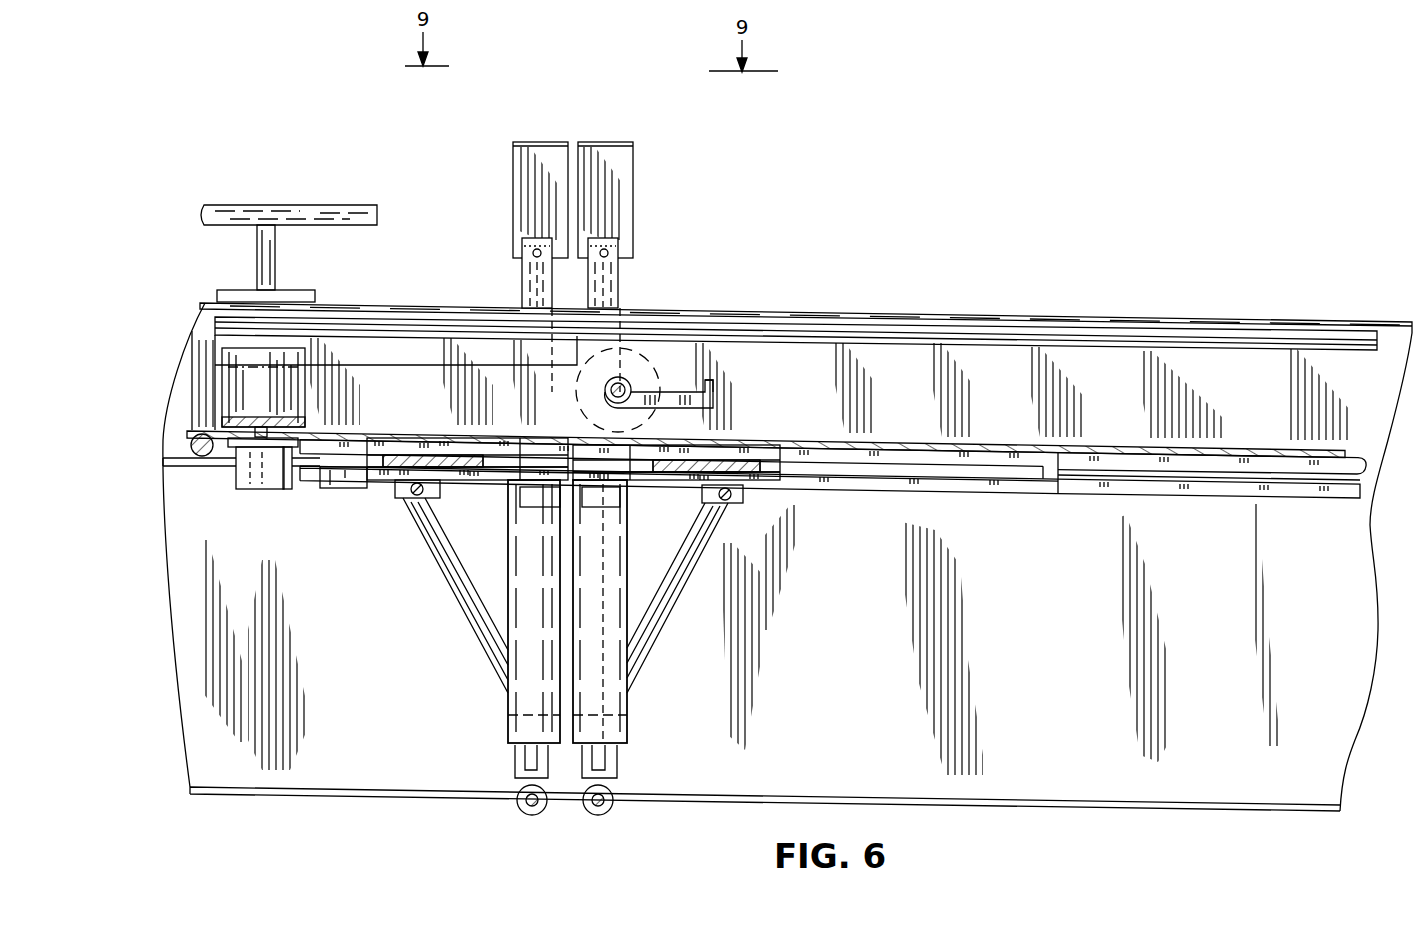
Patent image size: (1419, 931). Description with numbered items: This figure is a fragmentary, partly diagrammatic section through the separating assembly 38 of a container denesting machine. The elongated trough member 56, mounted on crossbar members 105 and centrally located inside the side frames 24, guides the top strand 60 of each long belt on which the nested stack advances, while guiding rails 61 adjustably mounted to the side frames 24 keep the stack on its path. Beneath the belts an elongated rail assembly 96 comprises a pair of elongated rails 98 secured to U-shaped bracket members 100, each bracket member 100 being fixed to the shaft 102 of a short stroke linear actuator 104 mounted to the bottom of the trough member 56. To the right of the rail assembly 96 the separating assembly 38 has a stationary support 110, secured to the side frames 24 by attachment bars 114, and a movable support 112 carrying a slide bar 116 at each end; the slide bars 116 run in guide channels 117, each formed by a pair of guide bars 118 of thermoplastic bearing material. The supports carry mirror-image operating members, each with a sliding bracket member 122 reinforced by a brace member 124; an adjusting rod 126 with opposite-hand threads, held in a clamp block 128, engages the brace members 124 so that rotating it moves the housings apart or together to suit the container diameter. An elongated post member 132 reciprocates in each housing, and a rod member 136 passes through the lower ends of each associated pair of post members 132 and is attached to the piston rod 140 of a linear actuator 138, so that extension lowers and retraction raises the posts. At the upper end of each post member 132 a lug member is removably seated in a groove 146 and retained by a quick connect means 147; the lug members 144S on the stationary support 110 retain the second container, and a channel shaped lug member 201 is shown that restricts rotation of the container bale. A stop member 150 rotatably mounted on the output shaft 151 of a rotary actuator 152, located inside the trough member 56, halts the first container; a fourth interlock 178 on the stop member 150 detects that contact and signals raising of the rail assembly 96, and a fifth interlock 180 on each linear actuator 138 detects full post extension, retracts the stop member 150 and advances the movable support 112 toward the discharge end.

The side frames 24 is at (1052, 317).
The separating assembly 38 is at (555, 80).
The trough member 56 is at (1058, 480).
The top strand 60 is at (945, 333).
The guiding rails 61 is at (313, 205).
The elongated rail assembly 96 is at (380, 330).
The elongated rails 98 is at (333, 377).
The U-shaped bracket member 100 is at (222, 390).
The shaft 102 is at (288, 489).
The short stroke linear actuator 104 is at (237, 489).
The crossbar members 105 is at (190, 446).
The stationary support 110 is at (392, 467).
The movable support 112 is at (770, 480).
The attachment bars 114 is at (340, 488).
The slide bar 116 is at (882, 465).
The guide channel 117 is at (992, 431).
The guide bars 118 is at (1108, 455).
The sliding bracket member 122 is at (483, 470).
The brace member 124 is at (470, 605).
The adjusting rod 126 is at (433, 497).
The clamp block 128 is at (445, 503).
The post member 132 is at (522, 292).
The rod member 136 is at (540, 815).
The linear actuator 138 is at (508, 690).
The piston rod 140 is at (530, 757).
The lug members 144S is at (525, 142).
The groove 146 is at (522, 258).
The quick connect means 147 is at (535, 250).
The stop member 150 is at (714, 392).
The output shaft 151 is at (628, 385).
The rotary actuator 152 is at (650, 365).
The fourth interlock 178 is at (709, 380).
The fifth interlock 180 is at (547, 508).
The channel shaped lug member 201 is at (633, 148).